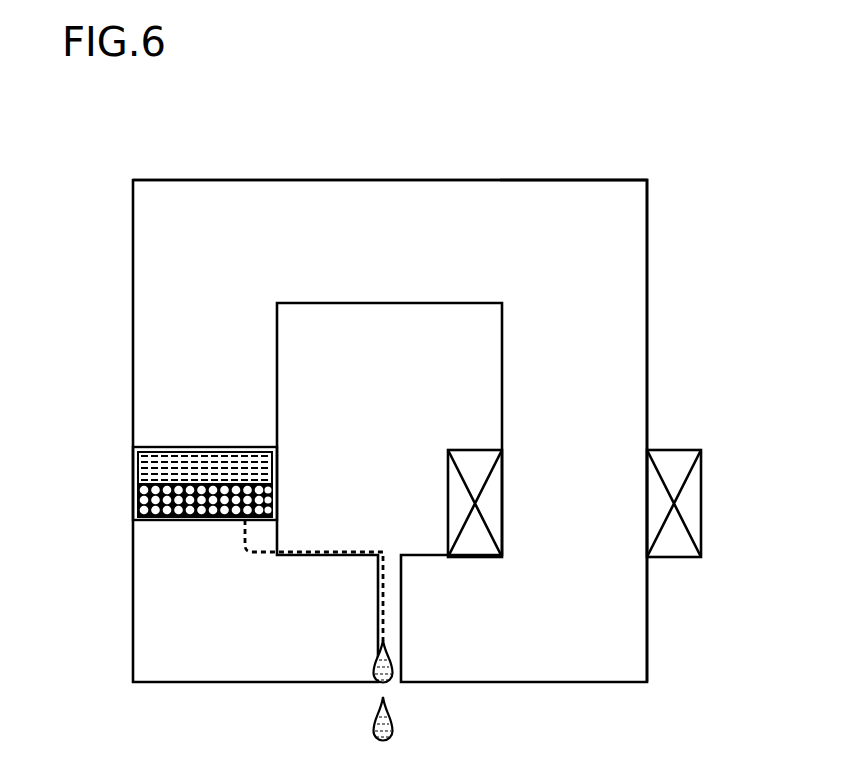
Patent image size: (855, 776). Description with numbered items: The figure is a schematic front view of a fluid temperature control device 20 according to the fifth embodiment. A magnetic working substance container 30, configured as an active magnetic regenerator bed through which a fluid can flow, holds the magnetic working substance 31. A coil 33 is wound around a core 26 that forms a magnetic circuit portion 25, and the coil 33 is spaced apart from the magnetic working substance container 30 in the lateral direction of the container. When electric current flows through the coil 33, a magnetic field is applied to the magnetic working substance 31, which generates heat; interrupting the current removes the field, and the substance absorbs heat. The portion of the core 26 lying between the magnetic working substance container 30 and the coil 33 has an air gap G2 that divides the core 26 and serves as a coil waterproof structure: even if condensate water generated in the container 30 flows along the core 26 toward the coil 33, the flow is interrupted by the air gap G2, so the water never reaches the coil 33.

The fluid temperature control device 20 is at (249, 157).
The magnetic circuit portion 25 is at (484, 178).
The core 26 is at (585, 180).
The magnetic working substance container 30 is at (192, 493).
The magnetic working substance 31 is at (258, 497).
The coil 33 is at (703, 500).
The air gap G2 is at (388, 550).